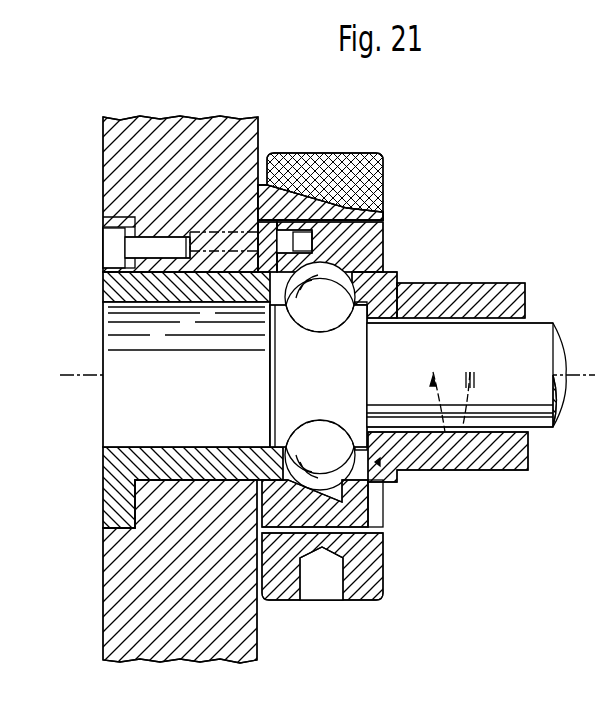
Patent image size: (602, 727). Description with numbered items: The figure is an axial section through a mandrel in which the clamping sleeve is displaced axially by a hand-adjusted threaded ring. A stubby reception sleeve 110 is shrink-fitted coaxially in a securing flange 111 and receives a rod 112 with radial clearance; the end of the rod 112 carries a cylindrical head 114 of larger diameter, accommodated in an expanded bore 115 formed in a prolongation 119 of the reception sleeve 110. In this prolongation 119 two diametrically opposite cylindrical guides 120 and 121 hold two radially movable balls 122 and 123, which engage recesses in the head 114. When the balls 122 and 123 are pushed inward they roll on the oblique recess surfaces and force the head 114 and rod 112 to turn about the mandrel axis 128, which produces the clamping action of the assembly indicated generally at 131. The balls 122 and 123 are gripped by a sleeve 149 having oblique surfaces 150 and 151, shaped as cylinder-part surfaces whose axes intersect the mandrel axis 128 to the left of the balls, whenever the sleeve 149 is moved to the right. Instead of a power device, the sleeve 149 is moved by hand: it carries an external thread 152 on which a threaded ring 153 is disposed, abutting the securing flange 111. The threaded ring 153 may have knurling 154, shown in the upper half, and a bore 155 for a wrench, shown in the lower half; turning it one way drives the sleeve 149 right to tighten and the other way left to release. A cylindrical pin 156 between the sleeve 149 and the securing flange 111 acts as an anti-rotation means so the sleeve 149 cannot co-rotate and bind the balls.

The reception sleeve 110 is at (489, 302).
The securing flange 111 is at (227, 143).
The rod 112 is at (530, 396).
The head 114 is at (272, 399).
The expanded bore 115 is at (123, 408).
The prolongation 119 is at (120, 286).
The guide 120 is at (362, 292).
The guide 121 is at (395, 472).
The ball 122 is at (306, 316).
The ball 123 is at (327, 452).
The mandrel axis 128 is at (528, 375).
The clamping assembly 131 is at (392, 157).
The sleeve 149 is at (283, 528).
The oblique surface 150 is at (330, 246).
The oblique surface 151 is at (302, 498).
The external thread 152 is at (385, 533).
The threaded ring 153 is at (288, 196).
The knurling 154 is at (348, 170).
The bore 155 is at (323, 584).
The cylindrical pin 156 is at (268, 243).